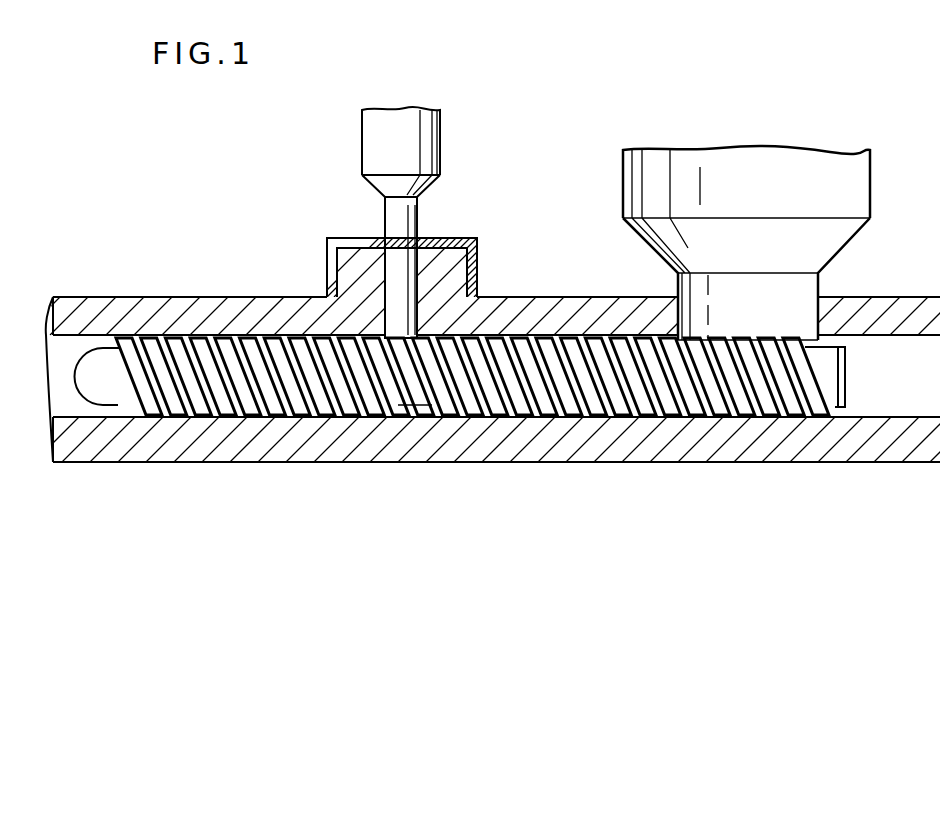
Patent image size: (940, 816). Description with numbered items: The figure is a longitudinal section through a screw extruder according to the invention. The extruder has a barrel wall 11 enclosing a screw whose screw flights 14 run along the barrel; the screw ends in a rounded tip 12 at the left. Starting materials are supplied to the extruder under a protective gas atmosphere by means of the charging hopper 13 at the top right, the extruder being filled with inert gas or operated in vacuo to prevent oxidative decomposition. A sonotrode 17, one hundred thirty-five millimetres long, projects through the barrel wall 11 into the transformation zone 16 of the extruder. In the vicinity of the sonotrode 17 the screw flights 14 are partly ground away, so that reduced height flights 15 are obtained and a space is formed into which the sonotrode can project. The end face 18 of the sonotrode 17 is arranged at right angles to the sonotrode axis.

The barrel wall 11 is at (166, 312).
The screw tip 12 is at (121, 392).
The charging hopper 13 is at (870, 200).
The screw flights 14 is at (625, 413).
The reduced height flights 15 is at (427, 412).
The transformation zone 16 is at (433, 343).
The sonotrode 17 is at (375, 137).
The end face 18 is at (398, 336).